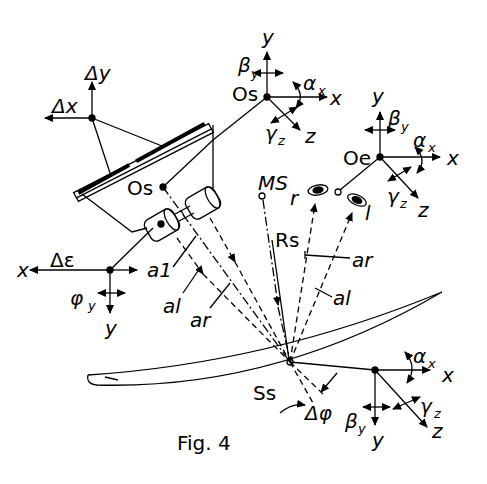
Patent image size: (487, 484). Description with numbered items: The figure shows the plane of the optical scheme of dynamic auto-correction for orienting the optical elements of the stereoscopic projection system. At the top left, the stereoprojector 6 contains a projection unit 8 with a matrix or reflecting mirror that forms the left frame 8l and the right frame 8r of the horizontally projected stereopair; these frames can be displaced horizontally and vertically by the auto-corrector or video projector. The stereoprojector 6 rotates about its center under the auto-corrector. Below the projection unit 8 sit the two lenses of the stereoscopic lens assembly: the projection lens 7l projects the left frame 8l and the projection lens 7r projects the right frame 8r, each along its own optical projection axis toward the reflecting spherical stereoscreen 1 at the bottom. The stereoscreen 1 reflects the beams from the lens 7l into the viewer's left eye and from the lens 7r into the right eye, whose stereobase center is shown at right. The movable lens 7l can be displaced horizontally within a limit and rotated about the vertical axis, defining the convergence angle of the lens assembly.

The stereoscreen 1 is at (117, 378).
The stereoprojector 6 is at (103, 209).
The projection lens 7l is at (147, 235).
The projection lens 7r is at (208, 196).
The projection unit 8 is at (122, 153).
The left frame 8l is at (97, 180).
The right frame 8r is at (171, 141).